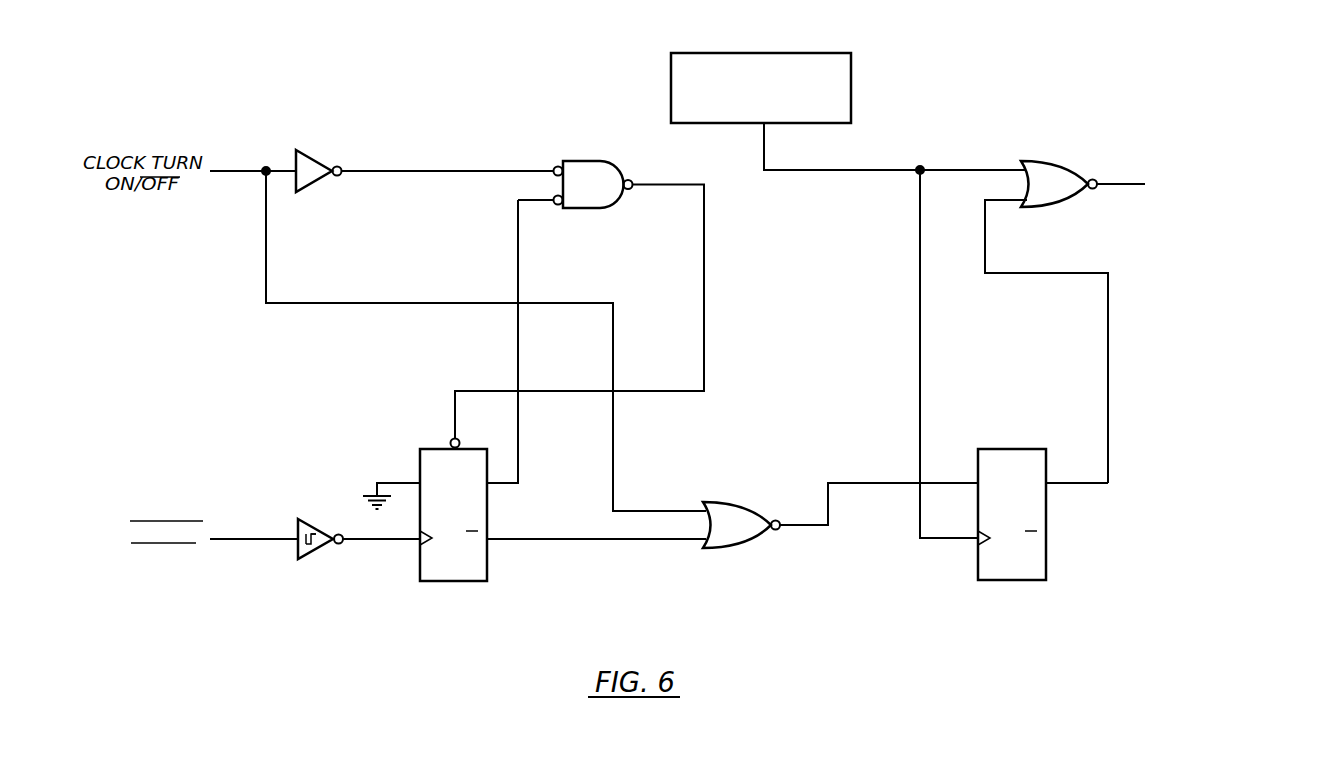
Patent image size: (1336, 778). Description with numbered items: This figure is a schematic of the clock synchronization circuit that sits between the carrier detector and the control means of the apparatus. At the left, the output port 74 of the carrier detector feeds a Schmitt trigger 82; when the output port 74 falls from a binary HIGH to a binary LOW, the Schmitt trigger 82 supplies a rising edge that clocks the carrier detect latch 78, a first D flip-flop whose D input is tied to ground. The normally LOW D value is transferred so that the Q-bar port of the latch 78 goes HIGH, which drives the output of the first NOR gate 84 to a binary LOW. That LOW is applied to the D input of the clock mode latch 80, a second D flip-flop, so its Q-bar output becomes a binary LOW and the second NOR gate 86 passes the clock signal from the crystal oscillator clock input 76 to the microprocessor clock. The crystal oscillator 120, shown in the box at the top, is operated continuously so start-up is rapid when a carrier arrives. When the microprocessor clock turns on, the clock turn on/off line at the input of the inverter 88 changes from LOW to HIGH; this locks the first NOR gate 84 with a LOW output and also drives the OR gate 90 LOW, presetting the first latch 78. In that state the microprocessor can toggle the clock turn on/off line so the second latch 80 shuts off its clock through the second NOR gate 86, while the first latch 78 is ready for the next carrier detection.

The output port 74 is at (245, 537).
The crystal oscillator clock input 76 is at (888, 172).
The carrier detect latch 78 is at (456, 581).
The clock mode latch 80 is at (1046, 567).
The Schmitt trigger 82 is at (320, 556).
The first NOR gate 84 is at (730, 549).
The second NOR gate 86 is at (1053, 160).
The inverter 88 is at (326, 157).
The OR gate 90 is at (593, 158).
The crystal oscillator 120 is at (680, 52).